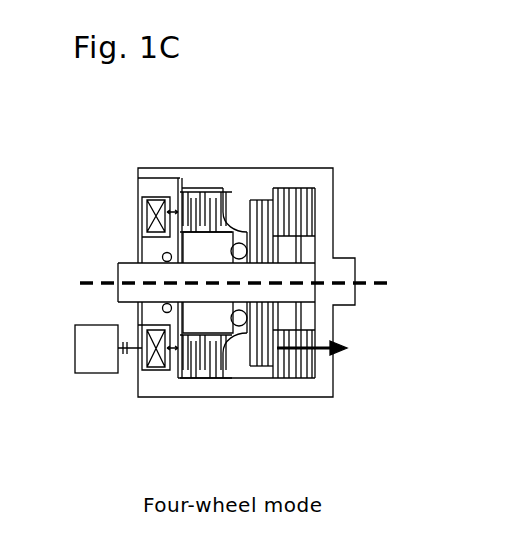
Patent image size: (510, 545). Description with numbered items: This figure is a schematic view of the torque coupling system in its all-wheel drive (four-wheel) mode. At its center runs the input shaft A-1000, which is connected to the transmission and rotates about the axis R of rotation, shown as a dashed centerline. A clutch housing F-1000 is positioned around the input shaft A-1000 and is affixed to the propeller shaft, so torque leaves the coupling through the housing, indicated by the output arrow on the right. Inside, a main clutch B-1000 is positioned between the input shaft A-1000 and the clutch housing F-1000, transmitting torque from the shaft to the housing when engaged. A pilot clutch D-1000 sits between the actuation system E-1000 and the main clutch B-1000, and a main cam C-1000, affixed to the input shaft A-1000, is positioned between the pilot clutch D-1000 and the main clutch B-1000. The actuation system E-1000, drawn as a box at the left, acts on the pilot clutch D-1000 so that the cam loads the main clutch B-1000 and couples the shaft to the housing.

The input shaft A-1000 is at (117, 283).
The main clutch B-1000 is at (290, 358).
The main cam C-1000 is at (220, 190).
The pilot clutch D-1000 is at (205, 345).
The actuation system E-1000 is at (100, 374).
The clutch housing F-1000 is at (293, 167).
The axis of rotation R is at (365, 283).